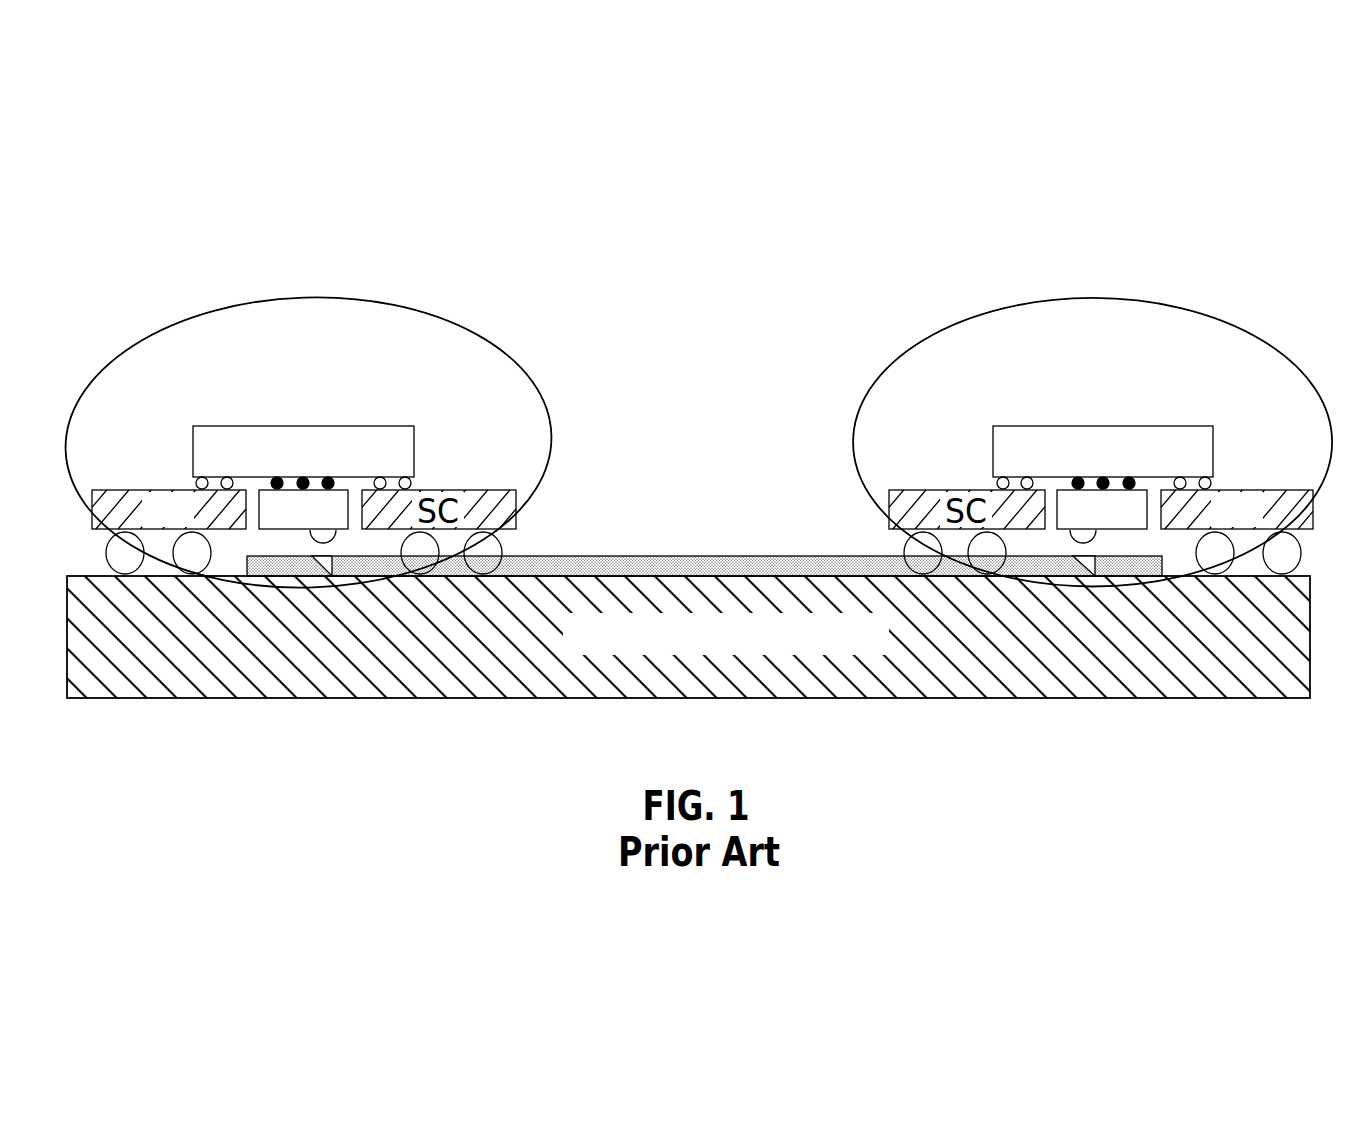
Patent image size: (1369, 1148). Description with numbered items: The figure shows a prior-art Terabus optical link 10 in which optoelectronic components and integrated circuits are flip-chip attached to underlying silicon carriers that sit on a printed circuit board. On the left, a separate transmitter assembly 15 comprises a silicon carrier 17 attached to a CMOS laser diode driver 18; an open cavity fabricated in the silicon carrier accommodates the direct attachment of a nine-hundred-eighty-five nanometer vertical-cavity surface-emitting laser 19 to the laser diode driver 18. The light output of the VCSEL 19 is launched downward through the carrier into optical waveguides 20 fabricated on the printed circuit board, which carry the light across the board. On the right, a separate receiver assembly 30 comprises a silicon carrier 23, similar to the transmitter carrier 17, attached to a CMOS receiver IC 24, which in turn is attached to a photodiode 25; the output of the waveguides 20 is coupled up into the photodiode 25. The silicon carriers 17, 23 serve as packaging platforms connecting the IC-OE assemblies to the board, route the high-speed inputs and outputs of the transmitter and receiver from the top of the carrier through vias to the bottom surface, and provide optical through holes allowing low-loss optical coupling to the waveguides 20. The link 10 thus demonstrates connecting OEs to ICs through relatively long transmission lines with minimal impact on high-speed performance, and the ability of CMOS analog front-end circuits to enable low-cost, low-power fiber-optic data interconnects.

The link 10 is at (733, 225).
The transmitter assembly 15 is at (498, 342).
The silicon carrier 17 is at (140, 490).
The CMOS laser diode driver 18 is at (270, 426).
The Vertical-Cavity Surface-Emitting Laser 19 is at (341, 490).
The optical waveguides 20 is at (622, 557).
The silicon carrier 23 is at (1280, 490).
The CMOS receiver IC 24 is at (1160, 427).
The photodiode 25 is at (1063, 490).
The receiver assembly 30 is at (916, 344).